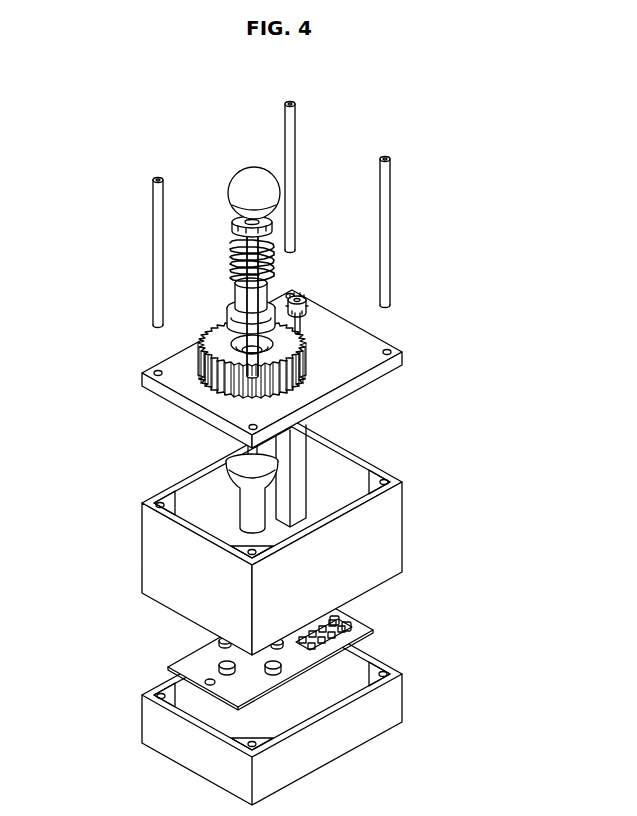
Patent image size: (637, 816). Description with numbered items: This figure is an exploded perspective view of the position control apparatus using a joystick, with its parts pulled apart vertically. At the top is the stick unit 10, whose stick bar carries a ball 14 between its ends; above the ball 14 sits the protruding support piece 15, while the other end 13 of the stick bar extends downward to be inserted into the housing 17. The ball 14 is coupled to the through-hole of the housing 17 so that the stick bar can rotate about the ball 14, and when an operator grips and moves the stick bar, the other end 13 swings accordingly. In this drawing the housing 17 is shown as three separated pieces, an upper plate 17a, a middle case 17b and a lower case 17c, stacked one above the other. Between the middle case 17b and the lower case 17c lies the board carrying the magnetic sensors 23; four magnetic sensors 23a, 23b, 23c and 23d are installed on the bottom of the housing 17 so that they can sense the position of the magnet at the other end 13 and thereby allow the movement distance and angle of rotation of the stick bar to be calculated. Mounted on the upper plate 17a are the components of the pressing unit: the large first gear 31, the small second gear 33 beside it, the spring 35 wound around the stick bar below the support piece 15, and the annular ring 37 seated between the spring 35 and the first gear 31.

The stick unit 10 is at (248, 161).
The other end of the stick bar 13 is at (250, 520).
The ball 14 is at (230, 478).
The protruding support piece 15 is at (240, 227).
The housing 17 is at (262, 369).
The upper plate of housing 17a is at (392, 382).
The middle case of housing 17b is at (387, 550).
The lower case of housing 17c is at (390, 715).
The magnetic sensors 23 is at (266, 664).
The magnetic sensor 23a is at (274, 674).
The magnetic sensor 23b is at (292, 642).
The magnetic sensor 23c is at (221, 643).
The magnetic sensor 23d is at (210, 686).
The first gear 31 is at (303, 348).
The second gear 33 is at (307, 302).
The spring 35 is at (233, 253).
The annular ring 37 is at (240, 293).